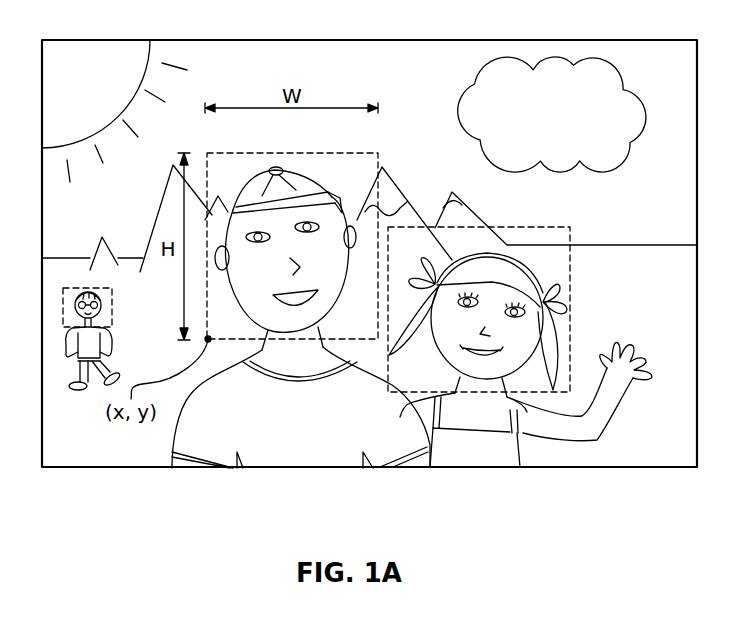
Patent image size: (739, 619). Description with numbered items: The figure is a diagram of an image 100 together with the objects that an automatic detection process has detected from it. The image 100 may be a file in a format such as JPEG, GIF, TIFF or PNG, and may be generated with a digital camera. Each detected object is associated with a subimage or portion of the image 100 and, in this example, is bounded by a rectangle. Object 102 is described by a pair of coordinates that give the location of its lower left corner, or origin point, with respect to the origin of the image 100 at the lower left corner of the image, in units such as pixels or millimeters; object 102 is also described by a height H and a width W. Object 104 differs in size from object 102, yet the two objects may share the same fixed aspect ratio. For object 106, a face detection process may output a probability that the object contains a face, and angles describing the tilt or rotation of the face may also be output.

The image 100 is at (103, 39).
The object 102 is at (265, 152).
The object 104 is at (113, 303).
The object 106 is at (513, 223).